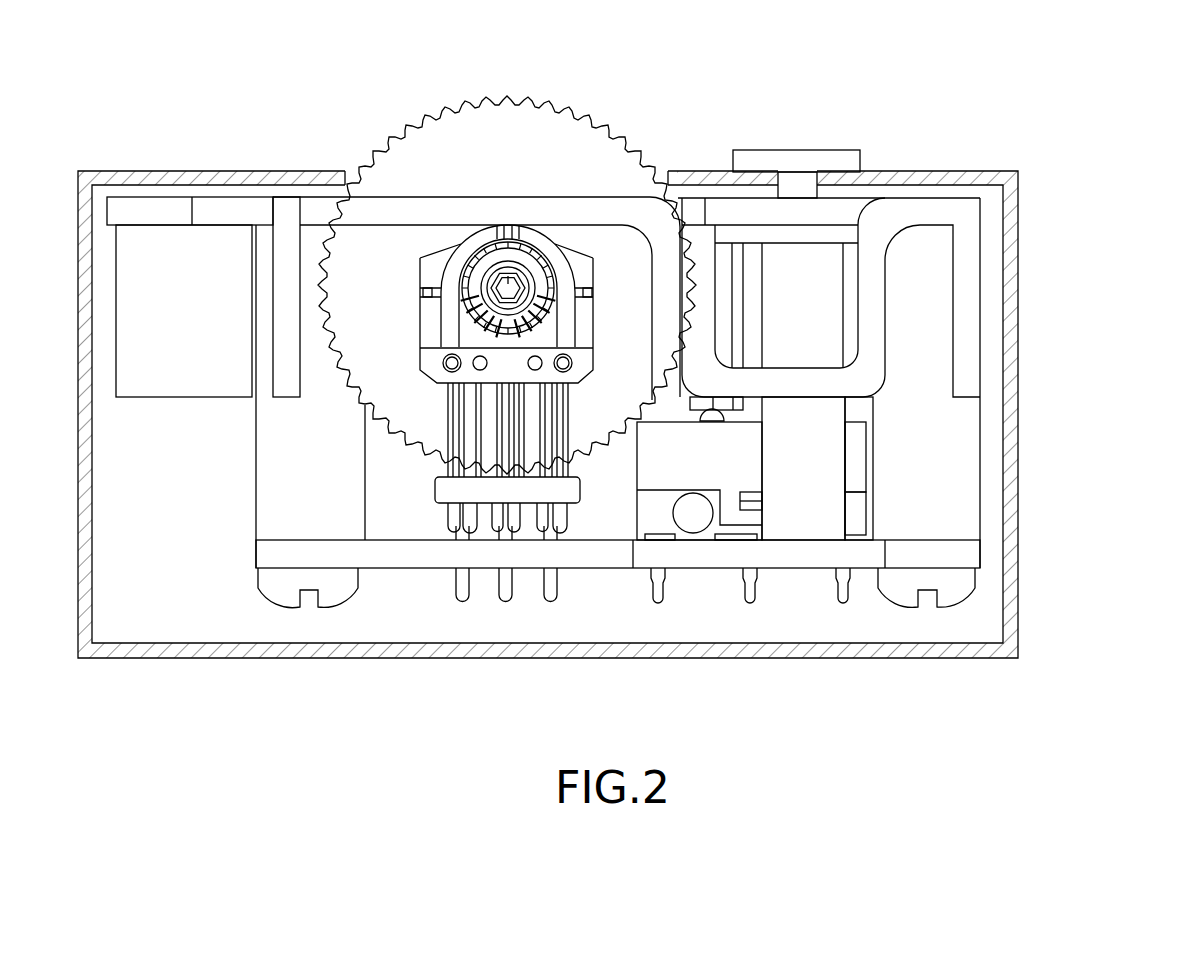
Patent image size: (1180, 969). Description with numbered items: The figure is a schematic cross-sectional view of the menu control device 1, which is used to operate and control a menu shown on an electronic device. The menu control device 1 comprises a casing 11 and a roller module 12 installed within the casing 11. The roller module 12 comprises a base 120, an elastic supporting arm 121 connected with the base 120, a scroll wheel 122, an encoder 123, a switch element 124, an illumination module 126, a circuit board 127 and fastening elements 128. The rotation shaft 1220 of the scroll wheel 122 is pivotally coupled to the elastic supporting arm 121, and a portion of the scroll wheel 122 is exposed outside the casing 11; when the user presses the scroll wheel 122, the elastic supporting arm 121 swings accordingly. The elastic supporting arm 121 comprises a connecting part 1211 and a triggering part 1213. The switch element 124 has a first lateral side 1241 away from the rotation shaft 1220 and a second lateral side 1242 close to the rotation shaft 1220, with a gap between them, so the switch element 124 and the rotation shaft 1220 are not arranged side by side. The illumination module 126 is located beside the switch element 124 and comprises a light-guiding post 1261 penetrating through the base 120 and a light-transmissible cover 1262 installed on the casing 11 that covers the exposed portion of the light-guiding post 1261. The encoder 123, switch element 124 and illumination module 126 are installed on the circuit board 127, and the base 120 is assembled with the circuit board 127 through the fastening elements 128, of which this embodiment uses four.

The menu control device 1 is at (831, 45).
The casing 11 is at (953, 178).
The roller module 12 is at (241, 522).
The base 120 is at (320, 212).
The elastic supporting arm 121 is at (920, 268).
The connecting part 1211 is at (822, 212).
The triggering part 1213 is at (738, 332).
The scroll wheel 122 is at (453, 130).
The rotation shaft 1220 is at (506, 284).
The encoder 123 is at (441, 366).
The switch element 124 is at (672, 553).
The first lateral side 1241 is at (883, 450).
The second lateral side 1242 is at (633, 468).
The illumination module 126 is at (1097, 368).
The light-guiding post 1261 is at (793, 185).
The light-transmissible cover 1262 is at (800, 158).
The circuit board 127 is at (772, 555).
The fastening element 128 is at (283, 585).